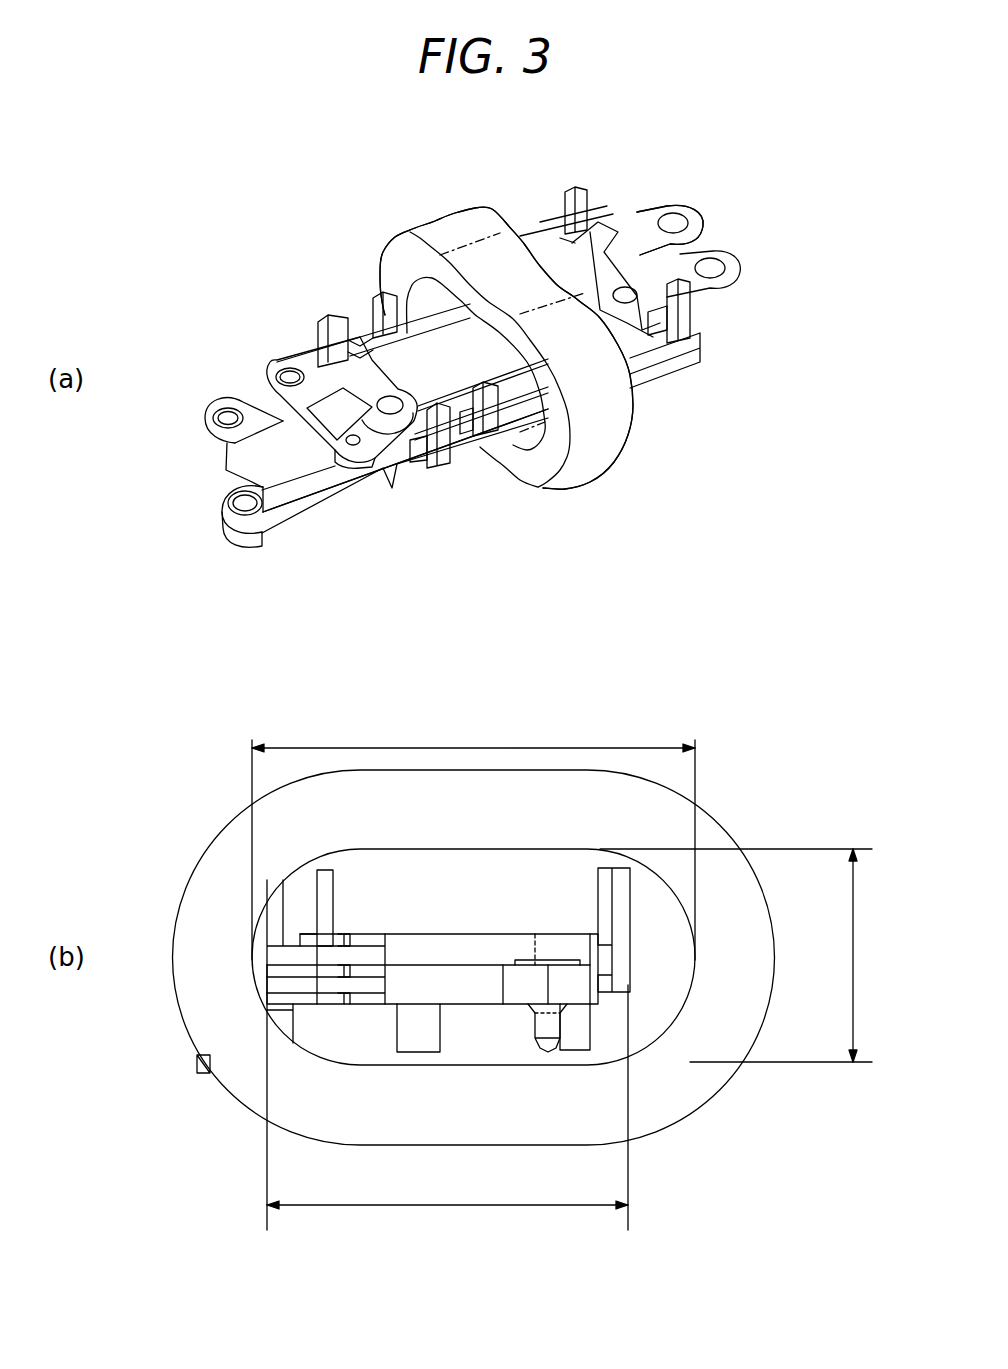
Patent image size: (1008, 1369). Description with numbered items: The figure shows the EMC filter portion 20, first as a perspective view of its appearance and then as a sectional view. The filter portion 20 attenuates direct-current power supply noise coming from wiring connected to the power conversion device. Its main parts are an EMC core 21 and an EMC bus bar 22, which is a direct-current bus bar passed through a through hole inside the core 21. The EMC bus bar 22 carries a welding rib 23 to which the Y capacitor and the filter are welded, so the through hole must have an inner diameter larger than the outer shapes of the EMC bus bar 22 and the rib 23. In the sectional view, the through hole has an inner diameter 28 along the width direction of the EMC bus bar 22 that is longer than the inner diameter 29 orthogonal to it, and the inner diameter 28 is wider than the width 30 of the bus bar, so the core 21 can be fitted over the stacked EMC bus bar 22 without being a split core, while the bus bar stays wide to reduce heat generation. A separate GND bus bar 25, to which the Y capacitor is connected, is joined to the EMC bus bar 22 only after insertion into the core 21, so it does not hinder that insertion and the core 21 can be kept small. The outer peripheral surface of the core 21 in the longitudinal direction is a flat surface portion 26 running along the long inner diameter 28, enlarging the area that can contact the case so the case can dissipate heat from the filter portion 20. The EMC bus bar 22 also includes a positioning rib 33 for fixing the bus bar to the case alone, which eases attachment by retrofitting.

The EMC filter portion 20 is at (243, 202).
The EMC core 21 is at (598, 462).
The EMC bus bar 22 is at (630, 358).
The welding rib 23 is at (437, 440).
The GND bus bar 25 is at (323, 315).
The flat surface portion 26 is at (478, 249).
The inner diameter of through hole in longitudinal direction 28 is at (473, 833).
The inner diameter of through hole in transverse direction 29 is at (736, 955).
The width of direct-current bus bar in cross-sectional longitudinal direction 30 is at (447, 1097).
The positioning rib 33 is at (548, 1022).